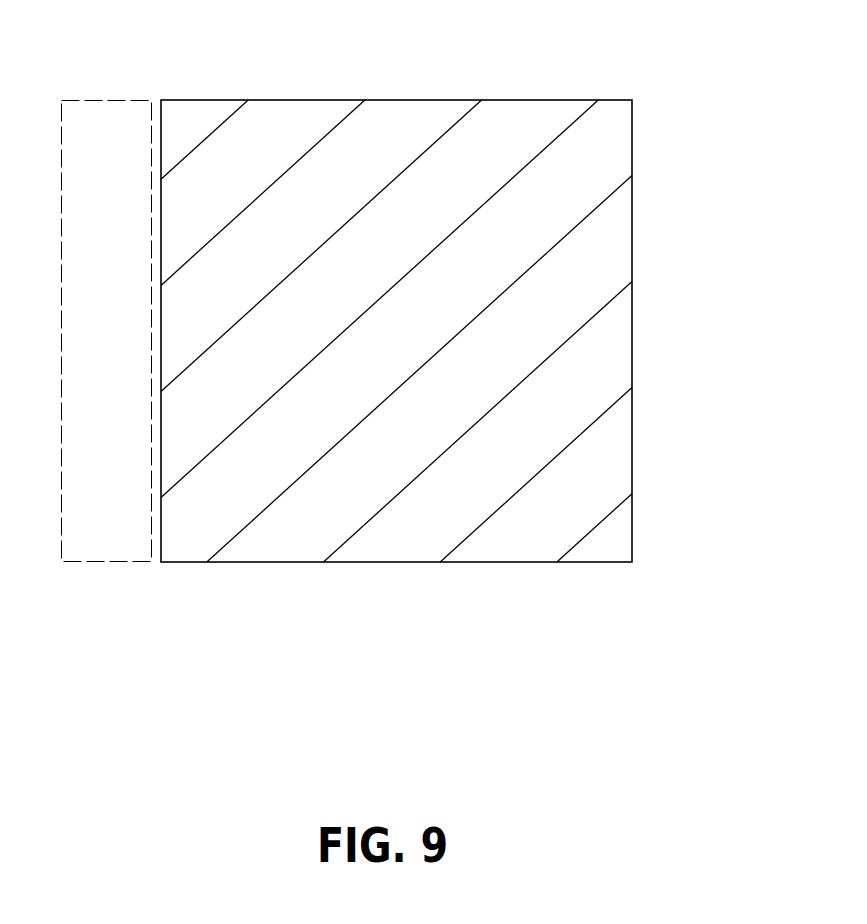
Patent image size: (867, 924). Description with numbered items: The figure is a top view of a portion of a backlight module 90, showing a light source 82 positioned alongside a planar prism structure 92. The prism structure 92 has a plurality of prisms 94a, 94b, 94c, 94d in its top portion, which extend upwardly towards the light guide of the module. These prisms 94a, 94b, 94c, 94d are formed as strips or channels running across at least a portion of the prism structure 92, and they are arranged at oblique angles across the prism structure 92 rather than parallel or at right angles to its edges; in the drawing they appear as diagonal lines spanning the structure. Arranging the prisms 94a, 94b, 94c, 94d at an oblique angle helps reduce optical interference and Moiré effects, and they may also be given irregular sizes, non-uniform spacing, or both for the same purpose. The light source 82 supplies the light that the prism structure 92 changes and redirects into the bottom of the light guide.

The backlight module 90 is at (380, 343).
The prism structure 92 is at (442, 297).
The prism 94a is at (632, 492).
The prism 94b is at (632, 387).
The prism 94c is at (632, 281).
The prism 94d is at (632, 176).
The light source 82 is at (108, 552).